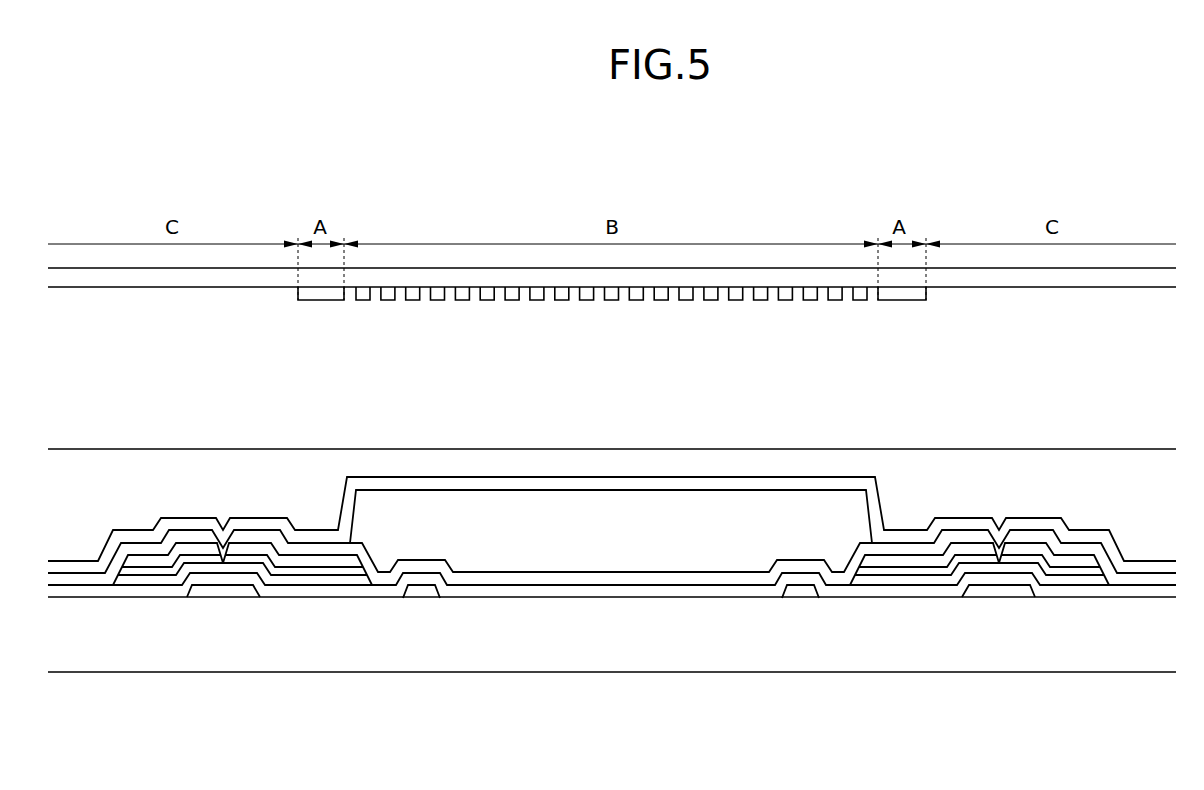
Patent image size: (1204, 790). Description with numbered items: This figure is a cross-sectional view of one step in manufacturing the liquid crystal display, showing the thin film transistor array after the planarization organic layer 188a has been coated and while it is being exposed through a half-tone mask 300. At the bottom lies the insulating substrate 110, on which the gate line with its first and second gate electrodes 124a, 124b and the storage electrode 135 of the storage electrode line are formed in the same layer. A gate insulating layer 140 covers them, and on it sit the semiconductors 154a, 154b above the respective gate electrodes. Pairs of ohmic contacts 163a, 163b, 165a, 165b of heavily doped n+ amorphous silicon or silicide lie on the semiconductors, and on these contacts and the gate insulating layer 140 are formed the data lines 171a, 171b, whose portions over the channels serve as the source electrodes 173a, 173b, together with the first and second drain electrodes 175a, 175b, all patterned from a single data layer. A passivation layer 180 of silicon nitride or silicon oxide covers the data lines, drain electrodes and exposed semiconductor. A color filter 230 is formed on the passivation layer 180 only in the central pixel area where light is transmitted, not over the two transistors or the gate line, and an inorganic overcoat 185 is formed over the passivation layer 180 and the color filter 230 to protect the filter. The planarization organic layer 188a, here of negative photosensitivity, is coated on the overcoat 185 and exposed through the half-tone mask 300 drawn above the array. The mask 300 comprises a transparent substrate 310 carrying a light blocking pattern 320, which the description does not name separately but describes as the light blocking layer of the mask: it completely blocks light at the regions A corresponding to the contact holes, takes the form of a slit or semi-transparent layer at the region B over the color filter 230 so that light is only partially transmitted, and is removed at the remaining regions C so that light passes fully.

The insulating substrate 110 is at (683, 640).
The first gate electrode 124a is at (987, 593).
The second gate electrode 124b is at (235, 593).
The storage electrode 135 is at (423, 592).
The gate insulating layer 140 is at (490, 591).
The semiconductor 154a is at (1014, 568).
The semiconductor 154b is at (208, 568).
The ohmic contact 163a is at (1068, 571).
The ohmic contact 163b is at (152, 571).
The ohmic contact 165a is at (932, 571).
The ohmic contact 165b is at (290, 571).
The data line 171a is at (1087, 561).
The data line 171b is at (135, 561).
The source electrode 173a is at (1034, 549).
The source electrode 173b is at (190, 545).
The first drain electrode 175a is at (903, 561).
The second drain electrode 175b is at (321, 561).
The passivation layer 180 is at (128, 547).
The overcoat 185 is at (590, 483).
The planarization organic layer 188a is at (283, 478).
The color filter 230 is at (548, 549).
The half-tone mask 300 is at (612, 331).
The transparent substrate 310 is at (987, 280).
The wire grid pattern 320 is at (612, 319).